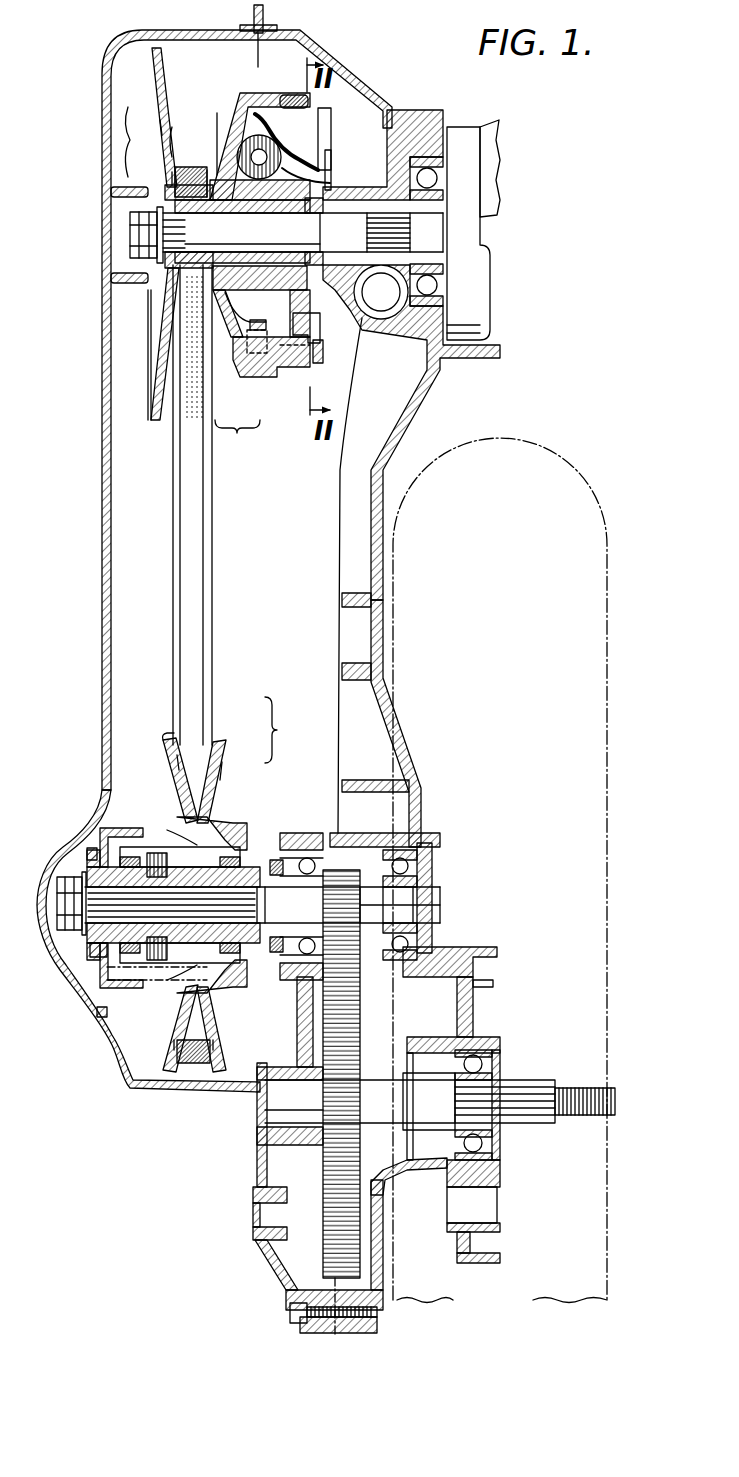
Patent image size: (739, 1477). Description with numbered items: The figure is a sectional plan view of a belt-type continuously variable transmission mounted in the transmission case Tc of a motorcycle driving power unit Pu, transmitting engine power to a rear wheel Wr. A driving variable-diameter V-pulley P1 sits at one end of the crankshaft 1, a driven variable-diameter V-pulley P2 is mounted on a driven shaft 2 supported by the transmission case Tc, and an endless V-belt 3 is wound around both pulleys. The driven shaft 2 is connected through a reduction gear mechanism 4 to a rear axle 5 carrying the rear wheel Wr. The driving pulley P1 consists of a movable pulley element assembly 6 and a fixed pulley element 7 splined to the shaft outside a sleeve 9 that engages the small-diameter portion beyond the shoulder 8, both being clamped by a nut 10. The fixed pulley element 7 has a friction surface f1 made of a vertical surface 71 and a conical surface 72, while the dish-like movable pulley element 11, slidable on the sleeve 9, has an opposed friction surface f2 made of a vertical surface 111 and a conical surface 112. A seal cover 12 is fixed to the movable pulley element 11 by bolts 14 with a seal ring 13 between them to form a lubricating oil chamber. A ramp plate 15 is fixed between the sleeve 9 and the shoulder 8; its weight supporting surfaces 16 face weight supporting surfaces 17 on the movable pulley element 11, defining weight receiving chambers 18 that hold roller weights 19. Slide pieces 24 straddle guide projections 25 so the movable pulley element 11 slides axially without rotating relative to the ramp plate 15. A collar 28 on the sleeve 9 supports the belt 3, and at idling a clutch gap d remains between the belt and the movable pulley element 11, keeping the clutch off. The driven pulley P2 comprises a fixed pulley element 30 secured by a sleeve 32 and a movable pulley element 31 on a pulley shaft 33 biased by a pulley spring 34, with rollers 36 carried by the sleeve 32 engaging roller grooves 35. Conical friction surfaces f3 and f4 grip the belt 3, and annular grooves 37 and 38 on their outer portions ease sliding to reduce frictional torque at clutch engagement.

The crankshaft 1 is at (434, 237).
The driven shaft 2 is at (300, 917).
The endless V-belt 3 is at (203, 545).
The reduction gear mechanism 4 is at (365, 1031).
The rear axle 5 is at (434, 1111).
The movable pulley element assembly 6 is at (257, 382).
The fixed pulley element 7 is at (160, 409).
The shoulder 8 is at (310, 213).
The sleeve 9 is at (242, 231).
The nut 10 is at (143, 210).
The movable pulley element 11 is at (258, 93).
The seal cover 12 is at (331, 118).
The seal ring 13 is at (297, 95).
The bolt 14 is at (323, 352).
The ramp plate 15 is at (331, 167).
The weight supporting surface 16 is at (285, 148).
The weight supporting surface 17 is at (248, 41).
The weight receiving chamber 18 is at (290, 170).
The roller weight 19 is at (262, 142).
The slide piece 24 is at (265, 330).
The guide projection 25 is at (306, 321).
The collar 28 is at (162, 297).
The fixed pulley element 30 is at (223, 755).
The movable pulley element 31 is at (173, 752).
The sleeve 32 is at (240, 863).
The pulley shaft 33 is at (230, 837).
The pulley spring 34 is at (120, 828).
The roller groove 35 is at (193, 842).
The roller 36 is at (153, 853).
The annular groove 37 is at (222, 773).
The annular groove 38 is at (177, 762).
The vertical surface 71 is at (172, 177).
The conical surface 72 is at (178, 128).
The vertical surface 111 is at (192, 170).
The conical surface 112 is at (222, 110).
The clutch gap d is at (213, 132).
The friction surface f1 is at (118, 142).
The friction surface f2 is at (175, 148).
The conical friction surface f3 is at (203, 1027).
The conical friction surface f4 is at (183, 1023).
The driving variable-diameter V-pulley P1 is at (237, 439).
The driven variable-diameter V-pulley P2 is at (282, 730).
The driving power unit Pu is at (100, 533).
The transmission case Tc is at (100, 381).
The rear wheel Wr is at (607, 680).